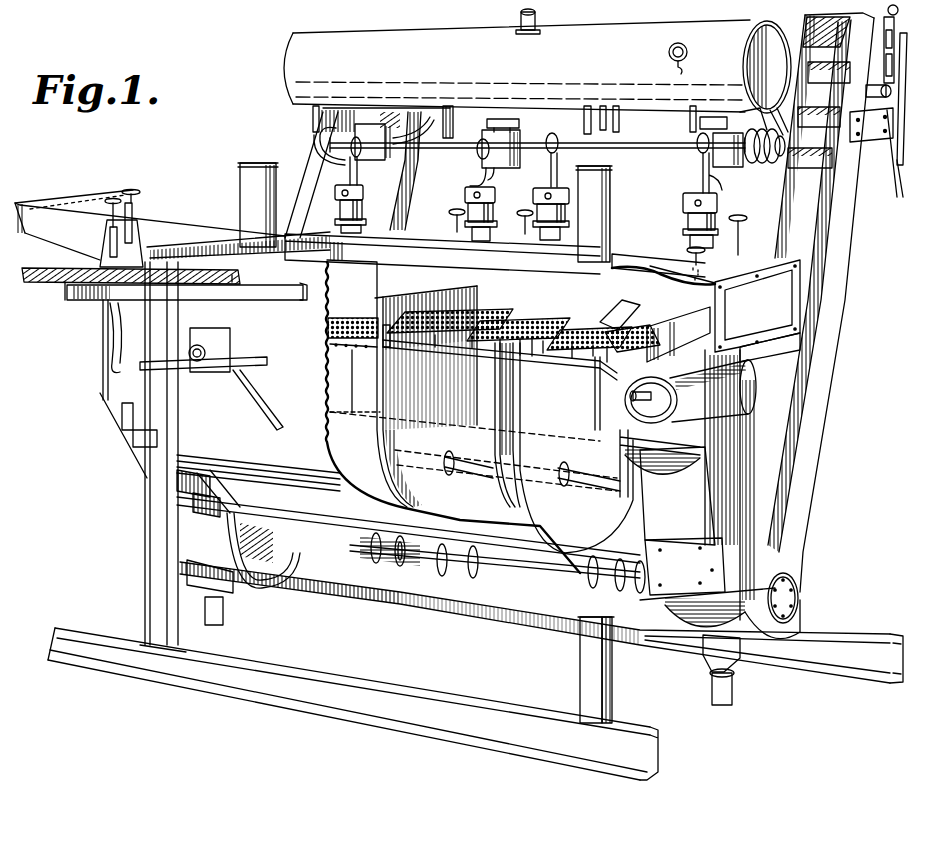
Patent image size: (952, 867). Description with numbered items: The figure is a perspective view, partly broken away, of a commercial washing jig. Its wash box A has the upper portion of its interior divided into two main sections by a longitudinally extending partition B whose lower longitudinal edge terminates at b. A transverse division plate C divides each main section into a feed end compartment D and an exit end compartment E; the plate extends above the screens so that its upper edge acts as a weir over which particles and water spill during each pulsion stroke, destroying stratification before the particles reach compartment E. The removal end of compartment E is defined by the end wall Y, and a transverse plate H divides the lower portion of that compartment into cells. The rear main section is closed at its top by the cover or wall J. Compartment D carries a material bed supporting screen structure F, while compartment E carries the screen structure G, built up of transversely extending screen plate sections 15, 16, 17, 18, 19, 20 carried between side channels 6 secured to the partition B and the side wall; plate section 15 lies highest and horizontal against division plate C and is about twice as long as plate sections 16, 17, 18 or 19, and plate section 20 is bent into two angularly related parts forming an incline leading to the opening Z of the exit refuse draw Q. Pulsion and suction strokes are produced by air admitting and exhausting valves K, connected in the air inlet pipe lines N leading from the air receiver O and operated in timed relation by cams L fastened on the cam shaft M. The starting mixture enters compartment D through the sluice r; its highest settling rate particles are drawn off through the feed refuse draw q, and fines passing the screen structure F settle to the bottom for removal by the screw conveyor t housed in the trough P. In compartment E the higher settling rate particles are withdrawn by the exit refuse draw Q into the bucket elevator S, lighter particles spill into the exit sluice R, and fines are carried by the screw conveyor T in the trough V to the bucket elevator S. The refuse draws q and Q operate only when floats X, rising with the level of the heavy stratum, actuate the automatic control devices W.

The air receiver O is at (468, 46).
The air inlet pipe lines N is at (352, 118).
The cams L is at (366, 150).
The air admitting and exhausting valves K is at (364, 200).
The cam shaft M is at (632, 152).
The cover or wall J is at (428, 242).
The bucket elevator S is at (300, 196).
The automatic devices W is at (251, 192).
The sluice r is at (171, 216).
The feed refuse or primary draw q is at (106, 372).
The wash box A is at (310, 382).
The feed end compartment D is at (352, 279).
The material bed supporting screen structure F is at (333, 326).
The division plate C is at (425, 293).
The transverse plate H is at (338, 430).
The partition B is at (475, 277).
The plate section 15 is at (439, 311).
The screen plate section 16 is at (520, 320).
The screen plate section 17 is at (571, 327).
The side channels 6 is at (533, 357).
The screen plate section 18 is at (527, 372).
The screen plate section 19 is at (569, 359).
The plate section 20 is at (610, 372).
The exit end compartment E is at (560, 294).
The floats X is at (603, 318).
The material bed supporting screen structure G is at (621, 326).
The exit sluice R is at (690, 308).
The opening Z is at (670, 353).
The exit refuse draw Q is at (662, 384).
The end wall Y is at (618, 464).
The lower longitudinal edge b is at (610, 440).
The screw conveyor T is at (620, 562).
The trough P is at (348, 553).
The screw conveyor t is at (396, 559).
The trough V is at (508, 569).